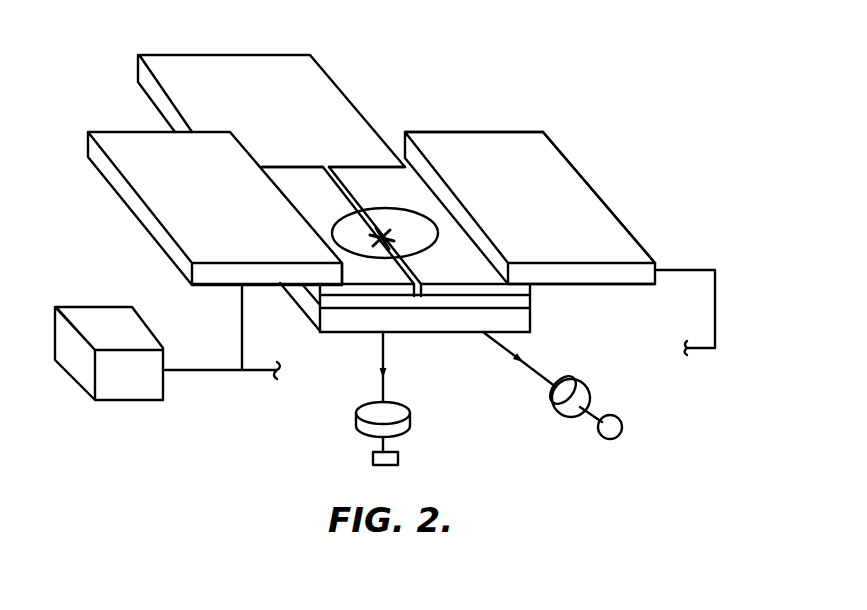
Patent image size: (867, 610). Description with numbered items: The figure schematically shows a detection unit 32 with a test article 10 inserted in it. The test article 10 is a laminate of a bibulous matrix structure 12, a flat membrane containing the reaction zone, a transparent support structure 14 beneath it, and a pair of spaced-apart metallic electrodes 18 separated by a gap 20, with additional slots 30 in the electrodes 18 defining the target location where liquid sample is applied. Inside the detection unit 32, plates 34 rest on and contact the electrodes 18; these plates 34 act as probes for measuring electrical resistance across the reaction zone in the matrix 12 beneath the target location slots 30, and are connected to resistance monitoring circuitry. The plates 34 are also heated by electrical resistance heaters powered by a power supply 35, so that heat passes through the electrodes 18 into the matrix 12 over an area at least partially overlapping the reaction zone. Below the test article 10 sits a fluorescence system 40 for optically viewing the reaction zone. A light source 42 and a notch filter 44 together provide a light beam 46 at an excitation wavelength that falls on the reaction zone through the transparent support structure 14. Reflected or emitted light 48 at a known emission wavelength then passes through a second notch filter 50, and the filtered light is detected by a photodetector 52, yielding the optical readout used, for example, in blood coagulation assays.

The test article 10 is at (184, 44).
The bibulous matrix structure 12 is at (535, 304).
The support structure 14 is at (535, 322).
The electrodes 18 is at (277, 167).
The gap 20 is at (323, 166).
The slots 30 is at (474, 114).
The detection unit 32 is at (524, 63).
The plates 34 is at (113, 130).
The power supply 35 is at (128, 401).
The fluorescence system 40 is at (336, 428).
The light source 42 is at (623, 421).
The notch filter 44 is at (586, 388).
The light beam 46 is at (537, 378).
The reflected or emitted light 48 is at (381, 352).
The second notch filter 50 is at (411, 420).
The photodetector 52 is at (399, 457).